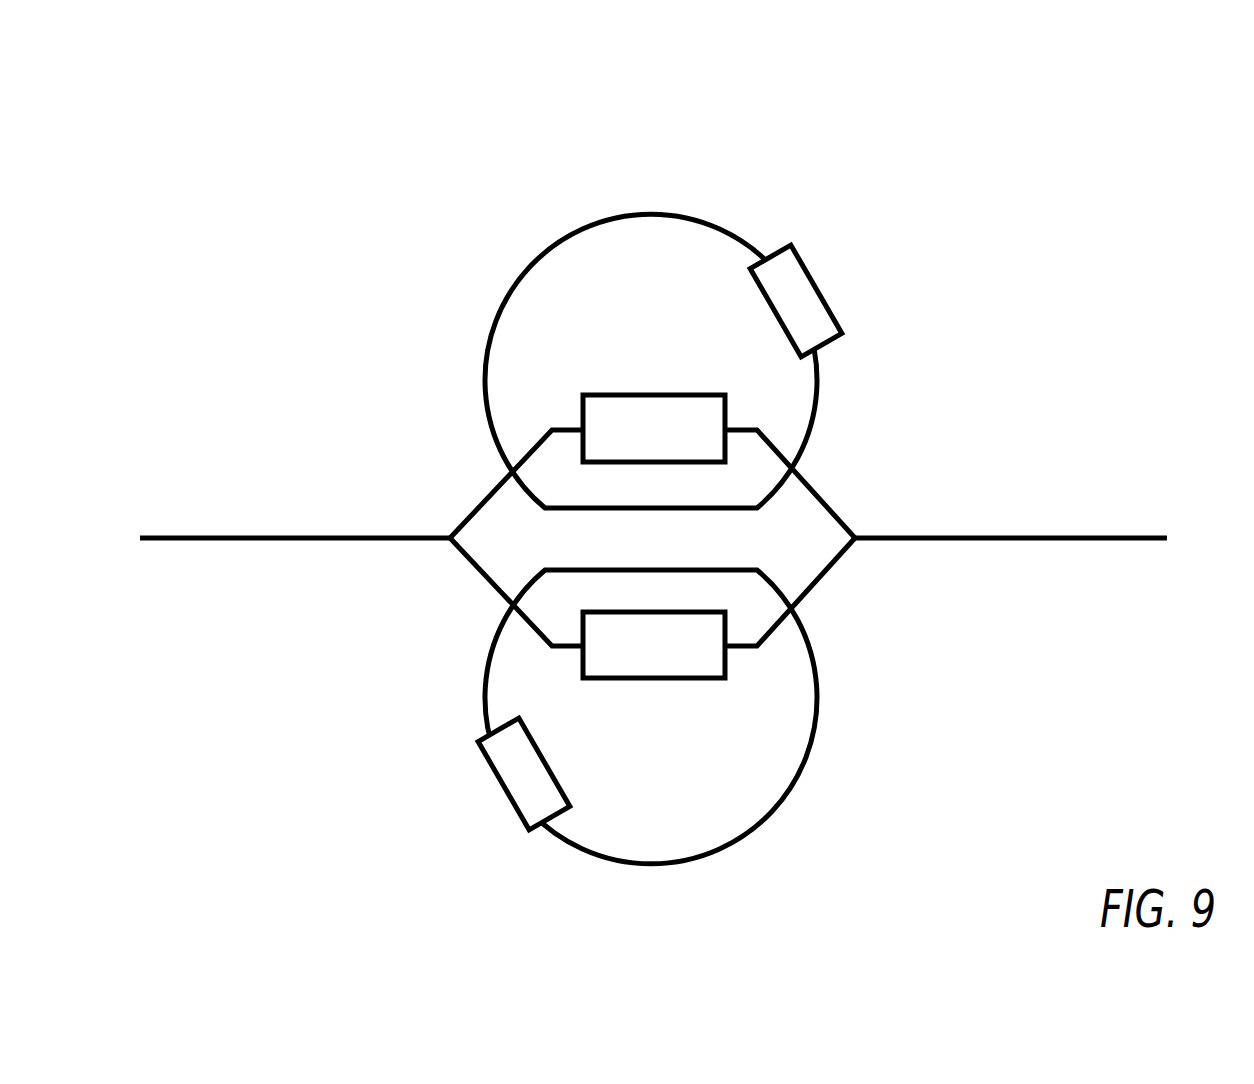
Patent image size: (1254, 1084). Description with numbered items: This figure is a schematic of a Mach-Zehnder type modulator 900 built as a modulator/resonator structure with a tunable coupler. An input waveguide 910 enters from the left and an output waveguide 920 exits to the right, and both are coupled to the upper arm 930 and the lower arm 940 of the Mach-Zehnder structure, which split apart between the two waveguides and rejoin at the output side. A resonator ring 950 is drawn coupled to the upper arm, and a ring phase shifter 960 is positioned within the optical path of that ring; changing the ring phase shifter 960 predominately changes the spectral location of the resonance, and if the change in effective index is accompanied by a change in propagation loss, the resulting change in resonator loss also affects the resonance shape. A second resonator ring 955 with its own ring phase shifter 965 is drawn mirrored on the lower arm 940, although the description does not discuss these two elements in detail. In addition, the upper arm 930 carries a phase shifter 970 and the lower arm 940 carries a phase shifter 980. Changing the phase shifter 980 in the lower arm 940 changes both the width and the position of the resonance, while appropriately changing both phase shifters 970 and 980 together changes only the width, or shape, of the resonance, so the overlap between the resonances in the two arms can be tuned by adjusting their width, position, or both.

The Mach-Zehnder type modulator 900 is at (1184, 57).
The input waveguide 910 is at (203, 540).
The output waveguide 920 is at (1045, 538).
The upper arm 930 is at (460, 508).
The lower arm 940 is at (490, 587).
The resonator ring 950 is at (688, 215).
The second ring resonator 955 is at (802, 773).
The ring phase shifter 960 is at (815, 280).
The second ring tuning element 965 is at (493, 780).
The phase shifter 970 is at (615, 393).
The phase shifter 980 is at (673, 677).